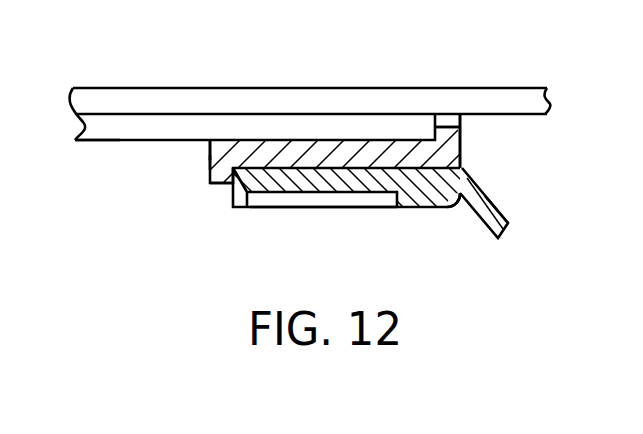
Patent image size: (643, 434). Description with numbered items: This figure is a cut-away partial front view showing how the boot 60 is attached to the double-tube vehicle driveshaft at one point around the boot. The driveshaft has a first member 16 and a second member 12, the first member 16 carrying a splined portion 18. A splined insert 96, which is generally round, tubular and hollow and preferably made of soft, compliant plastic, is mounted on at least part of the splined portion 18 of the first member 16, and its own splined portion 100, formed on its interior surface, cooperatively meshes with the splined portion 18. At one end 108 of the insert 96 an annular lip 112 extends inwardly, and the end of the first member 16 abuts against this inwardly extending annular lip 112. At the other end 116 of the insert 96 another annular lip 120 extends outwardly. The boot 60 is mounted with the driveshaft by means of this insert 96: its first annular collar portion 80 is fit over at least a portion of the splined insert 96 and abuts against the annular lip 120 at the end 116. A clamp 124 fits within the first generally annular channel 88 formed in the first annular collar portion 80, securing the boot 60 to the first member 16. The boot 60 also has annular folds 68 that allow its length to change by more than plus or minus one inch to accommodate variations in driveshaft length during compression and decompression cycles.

The second member 12 is at (495, 102).
The first member 16 is at (117, 143).
The splined portion 18 is at (192, 130).
The splined portion 100 is at (292, 140).
The clamp 124 is at (418, 128).
The annular lip 112 is at (462, 140).
The first annular collar portion 80 is at (422, 190).
The first generally annular channel 88 is at (358, 193).
The boot 60 is at (507, 220).
The annular folds 68 is at (494, 205).
The end 108 is at (456, 194).
The end 116 is at (208, 148).
The splined insert 96 is at (208, 162).
The annular lip 120 is at (222, 186).